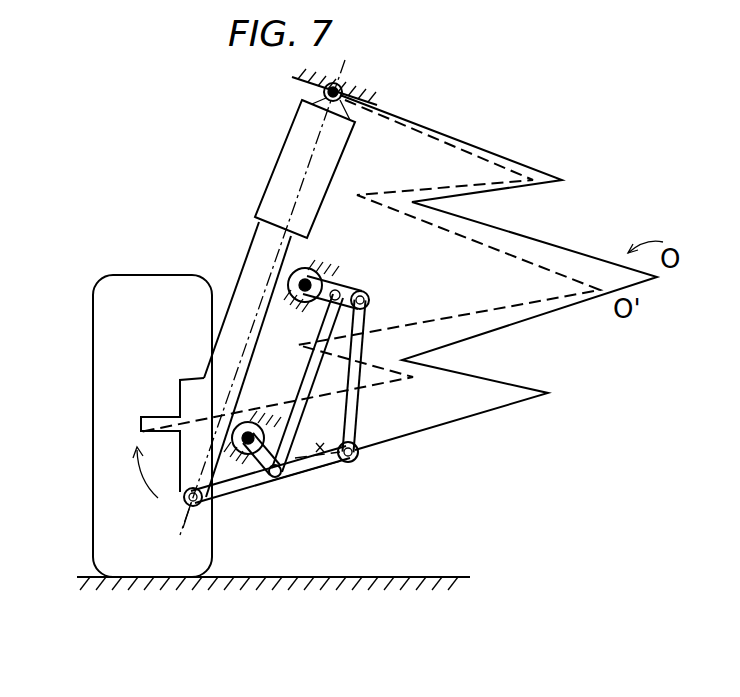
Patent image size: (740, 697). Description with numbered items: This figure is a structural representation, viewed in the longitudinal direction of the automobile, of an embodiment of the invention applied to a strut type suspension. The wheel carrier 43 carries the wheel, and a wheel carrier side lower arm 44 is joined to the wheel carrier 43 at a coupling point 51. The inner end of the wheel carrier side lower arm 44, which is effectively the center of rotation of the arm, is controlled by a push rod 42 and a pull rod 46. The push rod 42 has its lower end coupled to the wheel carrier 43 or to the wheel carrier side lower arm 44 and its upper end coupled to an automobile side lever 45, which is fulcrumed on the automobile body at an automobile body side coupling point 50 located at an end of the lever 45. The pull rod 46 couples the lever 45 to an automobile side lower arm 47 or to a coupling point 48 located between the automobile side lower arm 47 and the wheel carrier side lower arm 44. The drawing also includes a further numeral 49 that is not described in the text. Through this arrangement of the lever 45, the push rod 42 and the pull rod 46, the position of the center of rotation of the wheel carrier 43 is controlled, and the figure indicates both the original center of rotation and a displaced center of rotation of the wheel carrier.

The push rod 42 is at (351, 428).
The wheel carrier 43 is at (188, 402).
The wheel carrier side lower arm 44 is at (245, 489).
The automobile side lever 45 is at (352, 284).
The pull rod 46 is at (349, 404).
The automobile side lower arm 47 is at (330, 466).
The coupling point 48 is at (352, 463).
The fixed pivot link 49 is at (266, 480).
The automobile body side coupling point 50 is at (273, 272).
The coupling point 51 is at (196, 520).